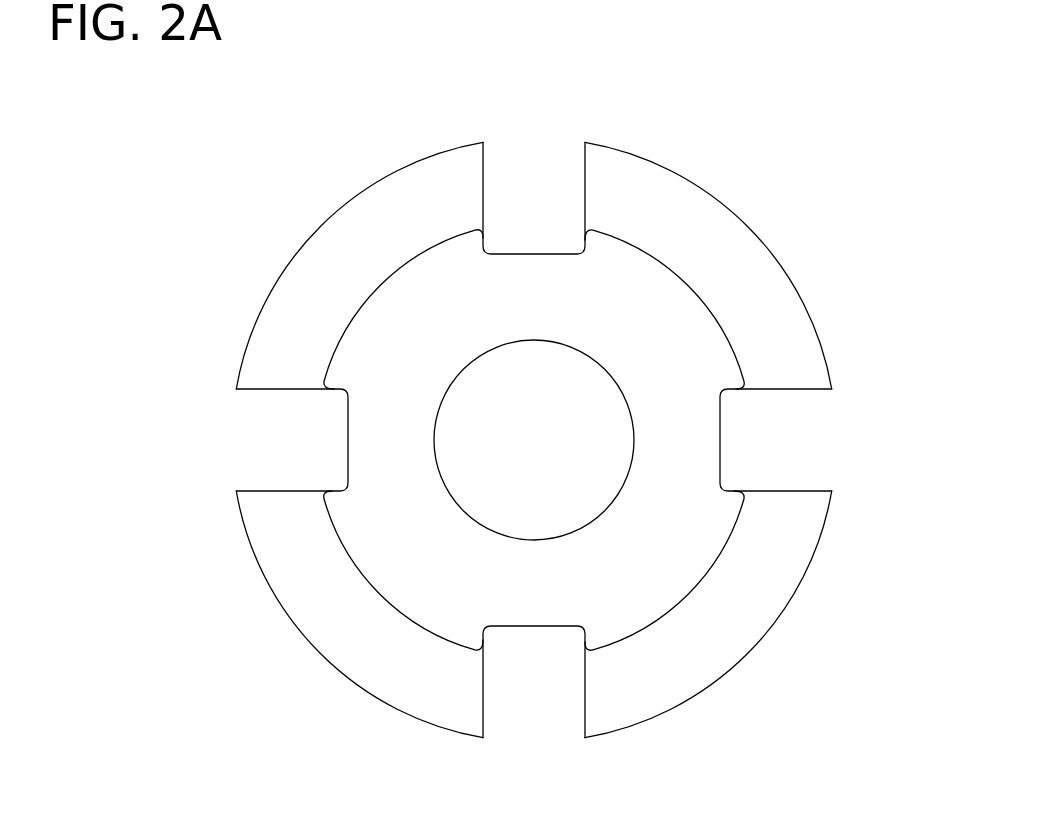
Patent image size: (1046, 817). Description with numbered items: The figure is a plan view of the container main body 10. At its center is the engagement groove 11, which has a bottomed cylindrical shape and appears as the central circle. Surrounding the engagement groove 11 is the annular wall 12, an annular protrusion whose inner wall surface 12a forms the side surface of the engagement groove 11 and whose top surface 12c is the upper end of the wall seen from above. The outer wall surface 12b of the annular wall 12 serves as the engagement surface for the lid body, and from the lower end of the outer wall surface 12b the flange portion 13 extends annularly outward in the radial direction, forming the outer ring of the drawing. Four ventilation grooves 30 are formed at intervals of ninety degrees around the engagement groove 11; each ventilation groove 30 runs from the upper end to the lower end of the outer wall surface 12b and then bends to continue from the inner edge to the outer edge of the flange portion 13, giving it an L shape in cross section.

The container main body 10 is at (352, 174).
The engagement groove 11 is at (493, 382).
The annular wall 12 is at (661, 331).
The inner wall surface 12a is at (620, 390).
The outer wall surface 12b is at (726, 334).
The top surface 12c is at (690, 345).
The flange portion 13 is at (762, 547).
The ventilation groove 30 is at (527, 253).